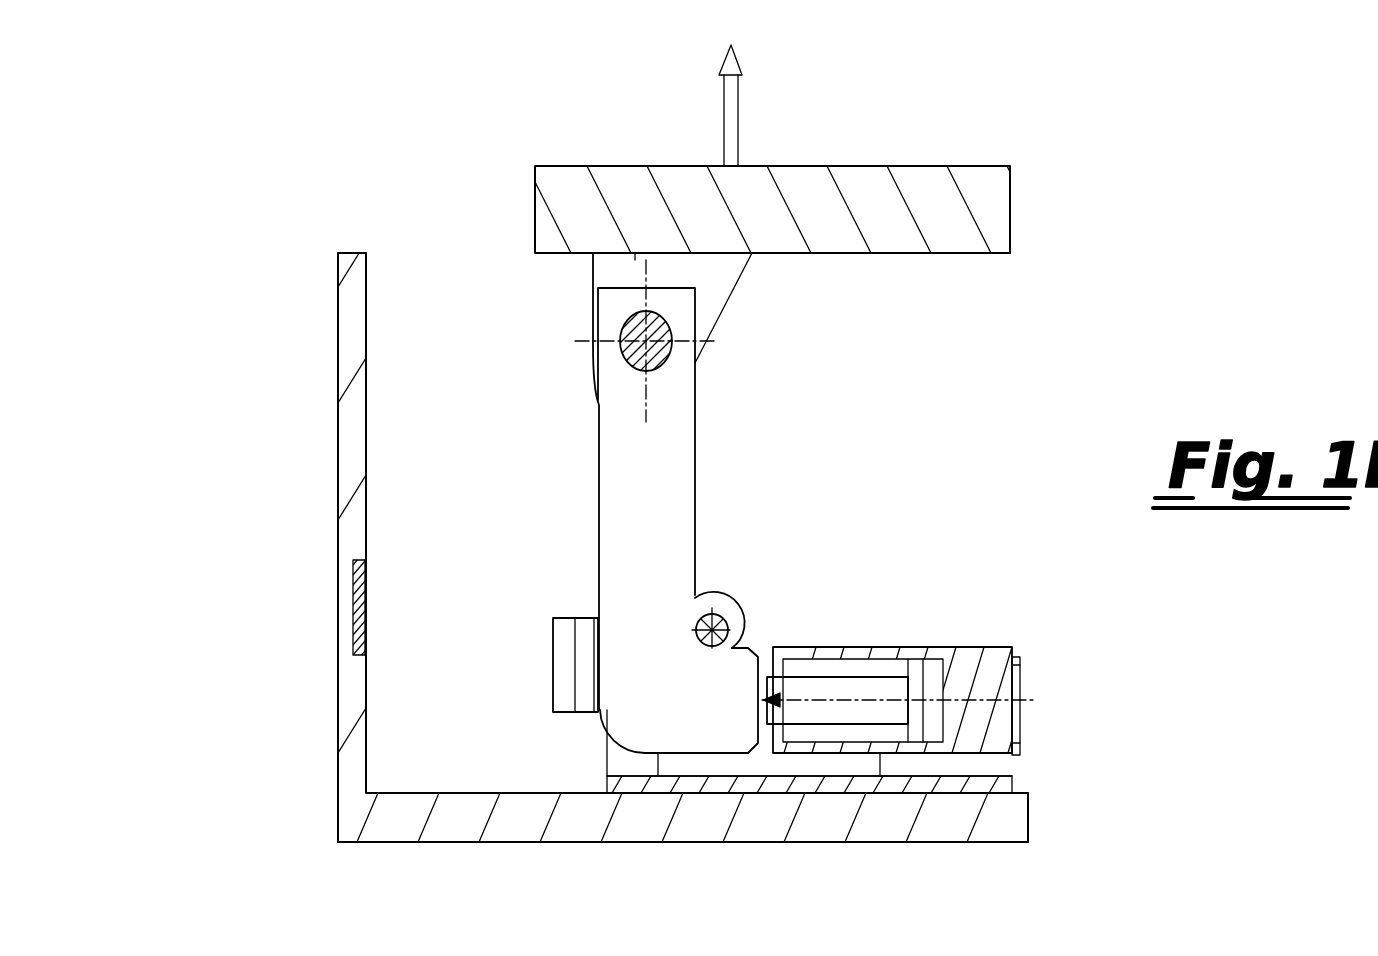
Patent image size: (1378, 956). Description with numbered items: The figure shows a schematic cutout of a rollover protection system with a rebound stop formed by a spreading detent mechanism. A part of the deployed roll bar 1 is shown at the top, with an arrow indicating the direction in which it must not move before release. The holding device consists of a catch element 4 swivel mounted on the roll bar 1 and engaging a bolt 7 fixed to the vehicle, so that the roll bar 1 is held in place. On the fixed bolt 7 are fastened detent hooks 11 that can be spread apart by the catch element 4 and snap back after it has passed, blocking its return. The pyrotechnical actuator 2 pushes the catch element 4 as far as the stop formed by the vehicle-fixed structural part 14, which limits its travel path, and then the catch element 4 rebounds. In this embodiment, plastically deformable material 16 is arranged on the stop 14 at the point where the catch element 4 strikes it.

The roll bar 1 is at (855, 172).
The pyrotechnical actuator 2 is at (882, 647).
The catch element 4 is at (600, 480).
The bolt 7 is at (723, 610).
The detent hooks 11 is at (553, 663).
The vehicle-fixed structural part 14 is at (363, 390).
The plastically deformable material 16 is at (358, 625).